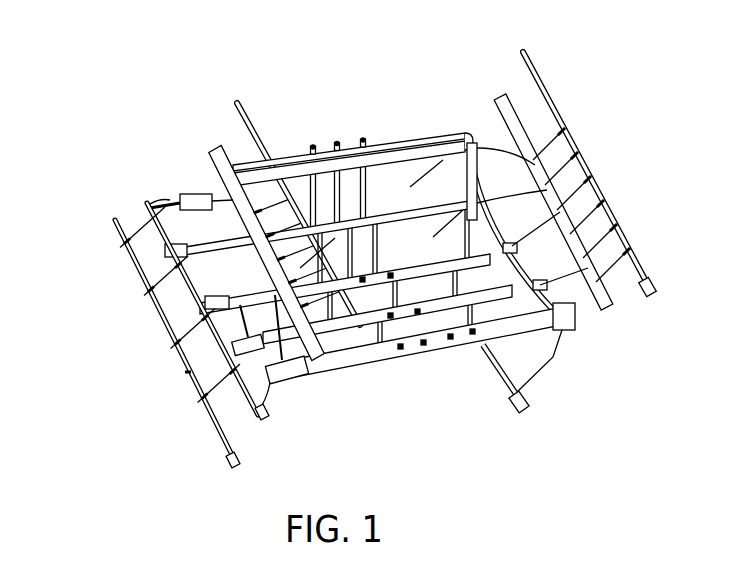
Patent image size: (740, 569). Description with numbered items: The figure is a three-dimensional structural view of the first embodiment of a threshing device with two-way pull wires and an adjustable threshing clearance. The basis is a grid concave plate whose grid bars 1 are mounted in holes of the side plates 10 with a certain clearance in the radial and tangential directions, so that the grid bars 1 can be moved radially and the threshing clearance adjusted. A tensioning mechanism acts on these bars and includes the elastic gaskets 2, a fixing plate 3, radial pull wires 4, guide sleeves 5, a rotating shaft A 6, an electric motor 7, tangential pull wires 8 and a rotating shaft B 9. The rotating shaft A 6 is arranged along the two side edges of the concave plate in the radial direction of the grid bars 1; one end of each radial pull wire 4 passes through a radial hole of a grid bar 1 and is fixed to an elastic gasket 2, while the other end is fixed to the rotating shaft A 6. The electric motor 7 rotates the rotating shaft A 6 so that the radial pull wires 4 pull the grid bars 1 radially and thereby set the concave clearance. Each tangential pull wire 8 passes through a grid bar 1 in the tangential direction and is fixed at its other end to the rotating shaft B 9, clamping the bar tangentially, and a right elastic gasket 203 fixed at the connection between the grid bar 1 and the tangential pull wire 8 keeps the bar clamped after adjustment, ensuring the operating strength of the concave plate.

The grid bar 1 is at (197, 197).
The elastic gasket 2 is at (157, 203).
The fixing plate 3 is at (132, 240).
The radial pull wire 4 is at (177, 267).
The guide sleeve 5 is at (210, 313).
The rotating shaft A 6 is at (185, 372).
The electric motor 7 is at (228, 457).
The tangential pull wire 8 is at (337, 157).
The rotating shaft B 9 is at (430, 137).
The side plate 10 is at (472, 143).
The right elastic gasket 203 is at (400, 350).